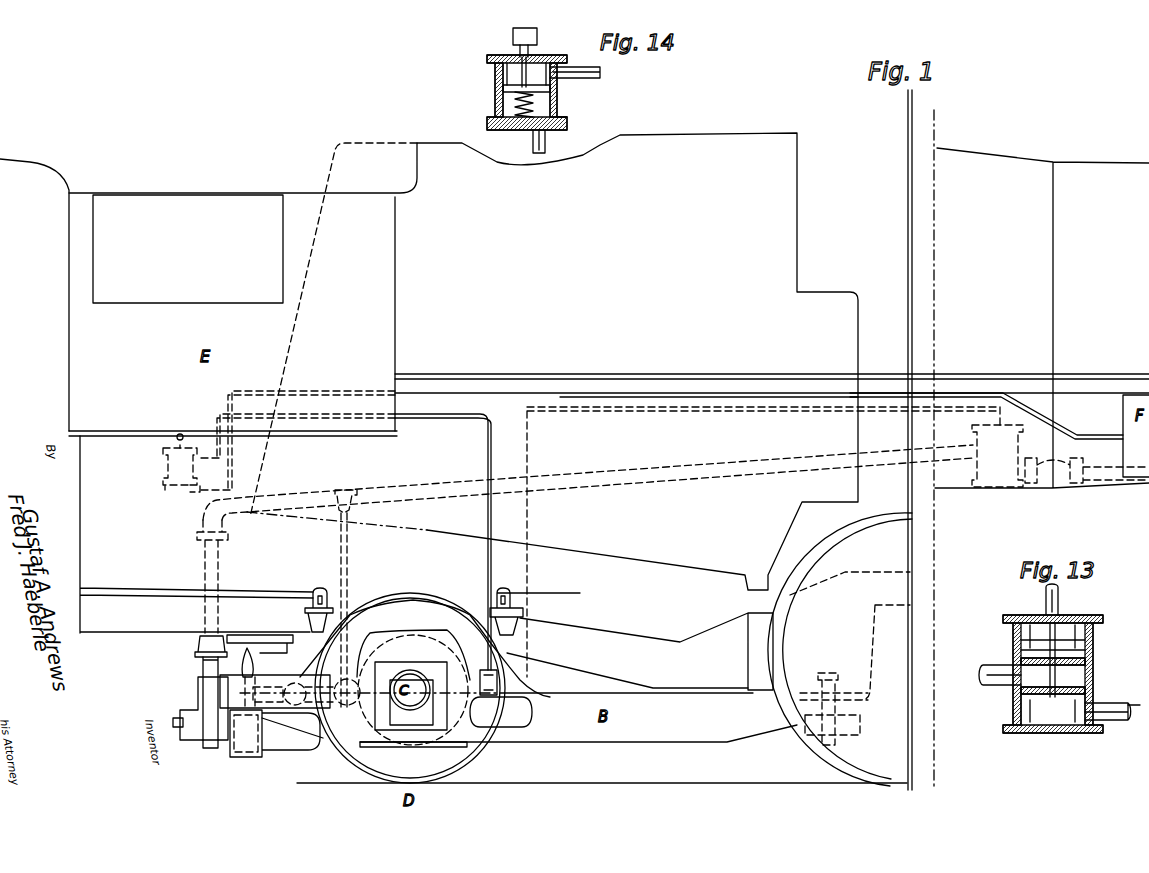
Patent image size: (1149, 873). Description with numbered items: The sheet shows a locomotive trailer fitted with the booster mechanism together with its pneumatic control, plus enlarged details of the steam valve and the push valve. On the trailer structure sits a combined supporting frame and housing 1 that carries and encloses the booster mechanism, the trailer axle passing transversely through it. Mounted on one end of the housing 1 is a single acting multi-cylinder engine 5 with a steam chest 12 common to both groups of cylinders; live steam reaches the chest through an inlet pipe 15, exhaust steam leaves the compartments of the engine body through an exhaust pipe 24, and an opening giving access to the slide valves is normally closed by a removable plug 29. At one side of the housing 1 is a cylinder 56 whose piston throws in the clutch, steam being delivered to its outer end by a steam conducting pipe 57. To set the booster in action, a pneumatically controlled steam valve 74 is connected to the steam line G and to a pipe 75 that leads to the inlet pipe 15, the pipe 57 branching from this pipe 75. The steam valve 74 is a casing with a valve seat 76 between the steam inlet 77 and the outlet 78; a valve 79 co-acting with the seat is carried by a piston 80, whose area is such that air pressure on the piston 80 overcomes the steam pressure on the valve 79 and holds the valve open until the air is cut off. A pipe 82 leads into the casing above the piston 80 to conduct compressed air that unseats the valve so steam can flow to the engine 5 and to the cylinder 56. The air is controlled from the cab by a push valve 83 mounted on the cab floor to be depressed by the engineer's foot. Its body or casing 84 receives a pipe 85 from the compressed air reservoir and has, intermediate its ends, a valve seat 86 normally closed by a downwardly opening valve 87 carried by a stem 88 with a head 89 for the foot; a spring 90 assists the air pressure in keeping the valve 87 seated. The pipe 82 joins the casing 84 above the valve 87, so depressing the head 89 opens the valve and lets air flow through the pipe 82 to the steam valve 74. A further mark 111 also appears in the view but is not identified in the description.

In FIG. 1, the frame or housing 1 is at (316, 745).
In FIG. 1, the motor or engine 5 is at (198, 707).
In FIG. 1, the steam chest 12 is at (203, 670).
In FIG. 1, the inlet pipe 15 is at (198, 659).
In FIG. 1, the exhaust pipe 24 is at (210, 750).
In FIG. 1, the removable plug 29 is at (175, 721).
In FIG. 1, the cylinder 56 is at (290, 733).
In FIG. 1, the steam conducting pipe 57 is at (348, 570).
In FIG. 1, the steam valve 74 is at (995, 490).
In FIG. 13, the steam valve 74 is at (1095, 660).
In FIG. 1, the pipe 75 is at (626, 475).
In FIG. 13, the pipe 75 is at (985, 680).
In FIG. 13, the valve seat 76 is at (1093, 692).
In FIG. 13, the steam inlet 77 is at (1110, 720).
In FIG. 13, the outlet 78 is at (1010, 673).
In FIG. 13, the valve 79 is at (1055, 698).
In FIG. 13, the piston 80 is at (1087, 637).
In FIG. 1, the pipe 82 is at (445, 418).
In FIG. 14, the pipe 82 is at (601, 74).
In FIG. 13, the pipe 82 is at (1060, 600).
In FIG. 1, the push valve 83 is at (167, 480).
In FIG. 14, the push valve 83 is at (487, 58).
In FIG. 1, the body or casing 84 is at (163, 466).
In FIG. 14, the body or casing 84 is at (495, 97).
In FIG. 1, the pipe 85 is at (560, 376).
In FIG. 14, the pipe 85 is at (546, 142).
In FIG. 14, the valve seat 86 is at (557, 90).
In FIG. 14, the valve 87 is at (503, 88).
In FIG. 14, the stem 88 is at (540, 68).
In FIG. 1, the head 89 is at (175, 440).
In FIG. 14, the head 89 is at (513, 37).
In FIG. 14, the spring 90 is at (515, 108).
In FIG. 1, the valve 111 is at (529, 688).
In FIG. 1, the steam line G is at (1097, 485).
In FIG. 13, the steam line G is at (1125, 704).